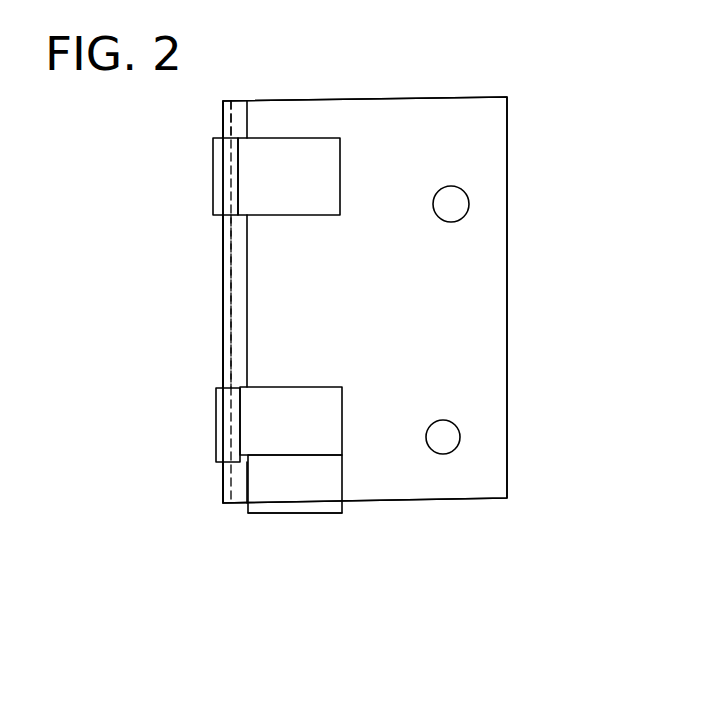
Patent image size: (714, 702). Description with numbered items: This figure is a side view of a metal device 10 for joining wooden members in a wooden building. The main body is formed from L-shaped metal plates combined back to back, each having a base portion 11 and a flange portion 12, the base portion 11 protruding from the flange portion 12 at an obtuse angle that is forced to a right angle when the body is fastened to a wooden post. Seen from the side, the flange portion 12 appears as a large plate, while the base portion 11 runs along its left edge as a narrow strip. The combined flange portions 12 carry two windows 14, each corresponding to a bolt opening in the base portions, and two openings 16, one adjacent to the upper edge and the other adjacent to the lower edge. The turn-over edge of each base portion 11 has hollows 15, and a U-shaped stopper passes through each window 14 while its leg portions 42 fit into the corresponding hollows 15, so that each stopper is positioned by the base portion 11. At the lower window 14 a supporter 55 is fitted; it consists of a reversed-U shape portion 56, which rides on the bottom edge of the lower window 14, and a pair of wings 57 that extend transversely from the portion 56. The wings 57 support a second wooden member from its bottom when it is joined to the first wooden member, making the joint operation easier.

The hinge assembly 10 is at (387, 96).
The base portion 11 is at (218, 298).
The flange portion 12 is at (490, 317).
The window 14 is at (302, 151).
The hollow 15 is at (241, 138).
The opening 16 is at (463, 196).
The leg portion 42 is at (213, 180).
The supporter 55 is at (300, 525).
The reversed-U shape portion 56 is at (329, 487).
The wing 57 is at (277, 510).